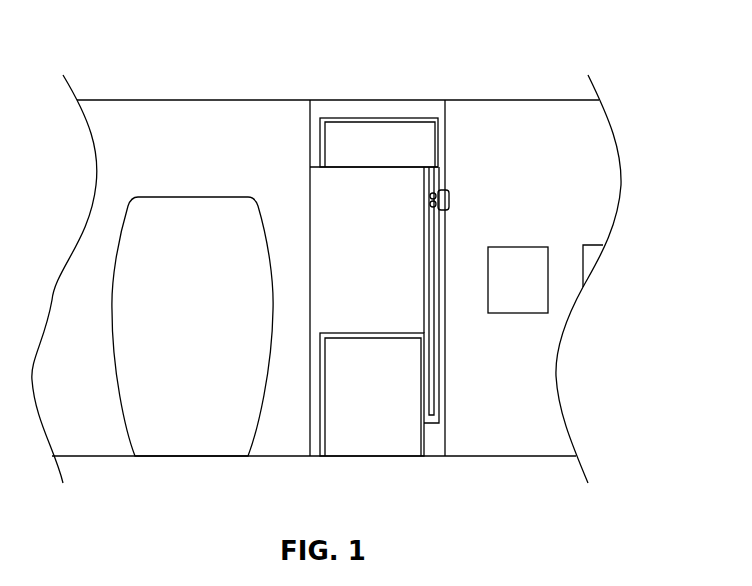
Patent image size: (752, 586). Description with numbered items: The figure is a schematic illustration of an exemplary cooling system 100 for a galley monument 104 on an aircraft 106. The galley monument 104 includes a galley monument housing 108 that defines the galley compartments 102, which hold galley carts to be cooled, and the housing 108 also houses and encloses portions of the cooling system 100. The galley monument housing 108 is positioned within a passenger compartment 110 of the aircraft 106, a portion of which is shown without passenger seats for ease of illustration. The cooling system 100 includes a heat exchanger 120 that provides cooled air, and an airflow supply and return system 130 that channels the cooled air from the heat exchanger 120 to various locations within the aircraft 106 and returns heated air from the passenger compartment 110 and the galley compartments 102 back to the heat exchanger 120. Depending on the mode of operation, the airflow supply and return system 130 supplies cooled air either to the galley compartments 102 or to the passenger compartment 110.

The cooling system 100 is at (350, 38).
The galley compartments 102 is at (367, 436).
The galley monument 104 is at (308, 336).
The aircraft 106 is at (190, 99).
The galley monument housing 108 is at (308, 137).
The passenger compartment 110 is at (533, 145).
The heat exchanger 120 is at (388, 147).
The airflow supply and return system 130 is at (439, 240).